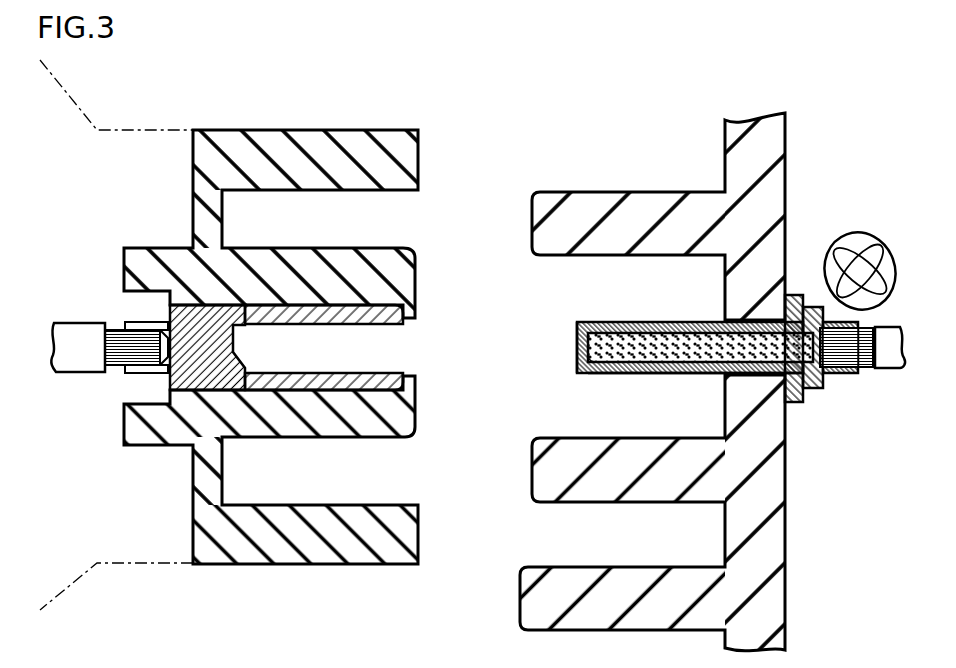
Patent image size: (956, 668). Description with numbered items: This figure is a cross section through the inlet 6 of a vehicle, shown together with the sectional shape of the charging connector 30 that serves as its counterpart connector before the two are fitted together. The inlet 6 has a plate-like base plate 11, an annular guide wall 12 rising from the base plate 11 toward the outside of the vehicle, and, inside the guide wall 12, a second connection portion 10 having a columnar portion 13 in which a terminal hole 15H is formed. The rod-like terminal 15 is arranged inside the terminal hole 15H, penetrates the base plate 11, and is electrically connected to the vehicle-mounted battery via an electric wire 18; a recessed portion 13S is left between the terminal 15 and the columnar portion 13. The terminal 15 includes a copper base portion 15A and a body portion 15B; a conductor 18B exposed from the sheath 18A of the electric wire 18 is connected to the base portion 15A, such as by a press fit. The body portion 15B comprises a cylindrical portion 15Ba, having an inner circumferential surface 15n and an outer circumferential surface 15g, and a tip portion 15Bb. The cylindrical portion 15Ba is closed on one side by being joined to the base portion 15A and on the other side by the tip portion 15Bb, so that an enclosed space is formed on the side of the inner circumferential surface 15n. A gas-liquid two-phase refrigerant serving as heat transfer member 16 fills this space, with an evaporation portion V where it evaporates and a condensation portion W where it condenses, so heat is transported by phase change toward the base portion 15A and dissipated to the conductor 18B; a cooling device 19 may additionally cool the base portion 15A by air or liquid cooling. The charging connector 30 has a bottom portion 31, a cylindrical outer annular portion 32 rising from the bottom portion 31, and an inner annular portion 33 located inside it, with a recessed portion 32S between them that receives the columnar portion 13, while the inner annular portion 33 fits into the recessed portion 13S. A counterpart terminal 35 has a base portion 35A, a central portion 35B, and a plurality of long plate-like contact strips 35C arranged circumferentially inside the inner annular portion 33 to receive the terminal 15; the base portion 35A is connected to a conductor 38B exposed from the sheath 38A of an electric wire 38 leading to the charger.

The charging connector 30 is at (204, 108).
The bottom portion 31 is at (208, 193).
The outer annular portion 32 is at (318, 160).
The recessed portion 32S is at (380, 213).
The inner annular portion 33 is at (248, 280).
The counterpart terminal 35 is at (393, 232).
The base portion 35A is at (163, 333).
The central portion 35B is at (200, 348).
The contact strips 35C is at (360, 318).
The electric wire 38 is at (140, 496).
The sheath 38A is at (78, 345).
The conductor 38B is at (120, 345).
The inlet 6 is at (743, 98).
The second connection portion 10 is at (530, 312).
The base plate 11 is at (757, 152).
The guide wall 12 is at (545, 598).
The columnar portion 13 is at (650, 225).
The recessed portion 13S is at (580, 292).
The terminal 15 is at (715, 544).
The base portion 15A is at (818, 362).
The body portion 15B is at (653, 423).
The cylindrical portion 15Ba is at (690, 366).
The tip portion 15Bb is at (578, 349).
The terminal hole 15H is at (615, 255).
The outer circumferential surface 15g is at (642, 368).
The inner circumferential surface 15n is at (616, 360).
The heat transfer member 16 is at (695, 340).
The electric wire 18 is at (908, 434).
The sheath 18A is at (887, 345).
The conductor 18B is at (850, 348).
The cooling device 19 is at (872, 252).
The evaporation portion V is at (641, 332).
The condensation portion W is at (760, 322).